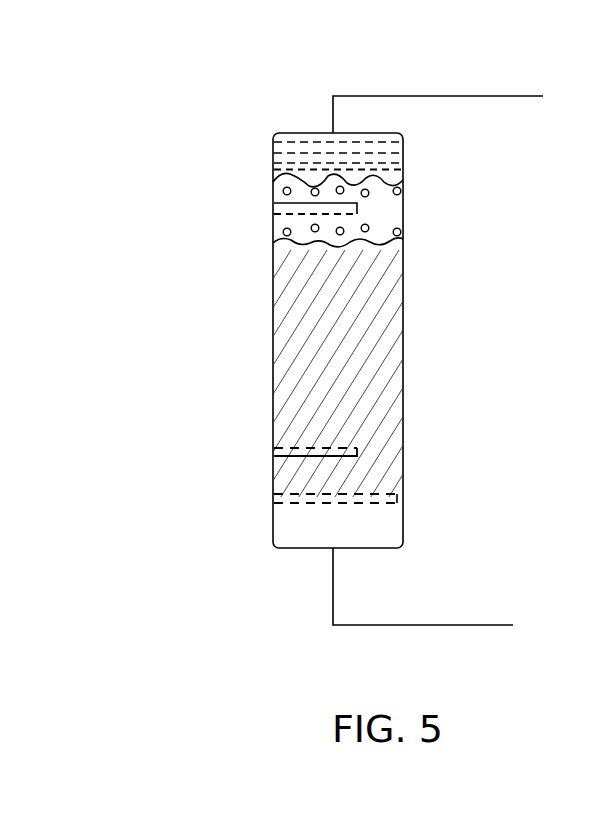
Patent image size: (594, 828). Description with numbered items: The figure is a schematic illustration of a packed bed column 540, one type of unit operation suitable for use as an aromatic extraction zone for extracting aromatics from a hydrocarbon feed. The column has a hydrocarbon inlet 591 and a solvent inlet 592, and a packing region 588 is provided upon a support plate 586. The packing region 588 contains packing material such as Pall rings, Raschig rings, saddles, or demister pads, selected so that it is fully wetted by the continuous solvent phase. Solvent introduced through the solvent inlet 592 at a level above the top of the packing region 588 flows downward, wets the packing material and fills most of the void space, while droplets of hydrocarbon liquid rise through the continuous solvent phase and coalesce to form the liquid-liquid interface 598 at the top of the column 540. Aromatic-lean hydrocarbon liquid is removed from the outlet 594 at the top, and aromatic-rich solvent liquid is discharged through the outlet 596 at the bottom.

The packed bed column 540 is at (207, 62).
The outlet 594 is at (438, 100).
The outlet 596 is at (452, 590).
The liquid-liquid interface 598 is at (380, 238).
The solvent inlet 592 is at (283, 206).
The packing region 588 is at (382, 345).
The hydrocarbon inlet 591 is at (274, 456).
The support plate 586 is at (400, 495).